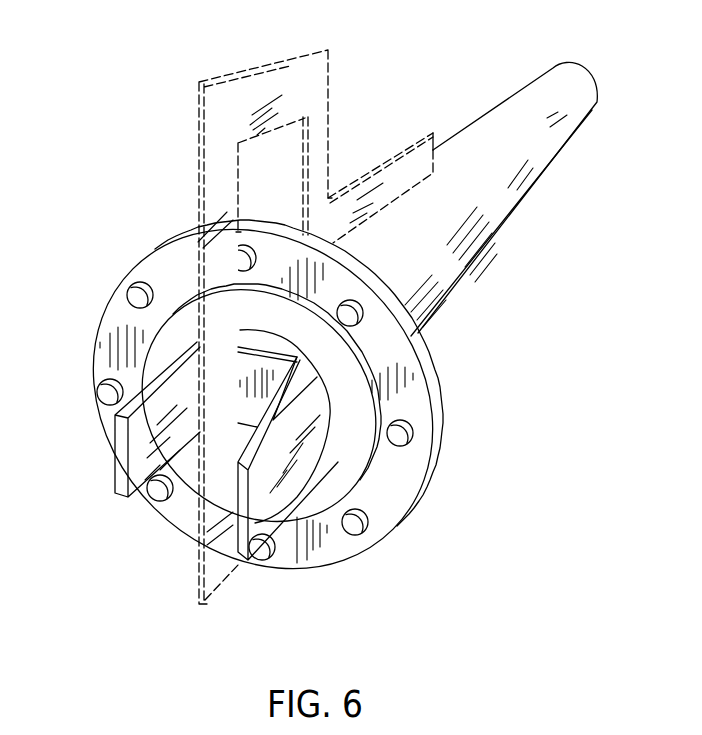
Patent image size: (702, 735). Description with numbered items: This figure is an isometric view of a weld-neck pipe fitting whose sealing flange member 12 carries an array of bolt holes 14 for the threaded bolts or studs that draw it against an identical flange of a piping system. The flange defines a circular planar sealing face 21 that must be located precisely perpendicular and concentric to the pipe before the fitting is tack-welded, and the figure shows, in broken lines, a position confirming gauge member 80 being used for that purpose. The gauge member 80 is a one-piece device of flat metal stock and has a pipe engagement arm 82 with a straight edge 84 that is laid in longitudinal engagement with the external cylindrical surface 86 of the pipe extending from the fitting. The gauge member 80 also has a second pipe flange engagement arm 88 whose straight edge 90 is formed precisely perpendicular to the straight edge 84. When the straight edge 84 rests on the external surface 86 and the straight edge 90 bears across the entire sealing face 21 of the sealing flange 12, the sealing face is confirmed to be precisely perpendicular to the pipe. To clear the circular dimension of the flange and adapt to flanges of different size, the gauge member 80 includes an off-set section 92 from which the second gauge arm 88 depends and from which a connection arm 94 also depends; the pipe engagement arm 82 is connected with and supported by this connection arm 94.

The sealing flange member 12 is at (137, 260).
The bolt holes 14 is at (393, 444).
The circular planar sealing face 21 is at (343, 393).
The position confirming gauge member 80 is at (205, 66).
The pipe engagement arm 82 is at (399, 150).
The straight edge 84 is at (385, 208).
The external cylindrical surface 86 is at (519, 103).
The second pipe flange engagement arm 88 is at (200, 577).
The straight edge 90 is at (245, 575).
The off-set section 92 is at (115, 468).
The connection arm 94 is at (320, 149).